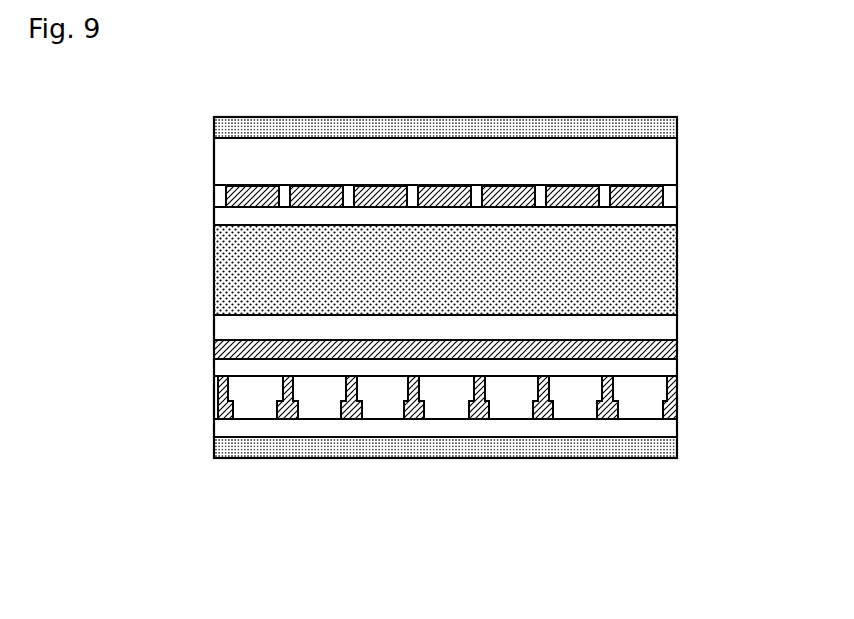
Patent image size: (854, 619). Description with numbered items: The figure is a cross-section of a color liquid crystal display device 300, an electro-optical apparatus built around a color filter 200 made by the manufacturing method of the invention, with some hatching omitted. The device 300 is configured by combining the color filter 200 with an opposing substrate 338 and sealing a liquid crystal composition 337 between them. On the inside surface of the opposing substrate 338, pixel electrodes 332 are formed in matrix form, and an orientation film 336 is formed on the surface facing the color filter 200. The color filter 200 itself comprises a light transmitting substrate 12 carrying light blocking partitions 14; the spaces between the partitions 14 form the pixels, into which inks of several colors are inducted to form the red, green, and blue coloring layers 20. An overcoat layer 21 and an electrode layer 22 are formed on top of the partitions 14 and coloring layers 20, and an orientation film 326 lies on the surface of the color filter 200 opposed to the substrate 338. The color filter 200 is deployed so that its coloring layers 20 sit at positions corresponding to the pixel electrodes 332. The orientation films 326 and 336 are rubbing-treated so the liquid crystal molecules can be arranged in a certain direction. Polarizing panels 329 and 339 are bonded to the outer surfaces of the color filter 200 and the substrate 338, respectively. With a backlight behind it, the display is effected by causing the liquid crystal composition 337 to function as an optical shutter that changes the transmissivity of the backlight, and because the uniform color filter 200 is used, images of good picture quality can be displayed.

The color liquid crystal display device 300 is at (514, 322).
The color filter 200 is at (514, 386).
The polarizing panel 339 is at (677, 128).
The opposing substrate 338 is at (677, 160).
The pixel electrodes 332 is at (677, 194).
The orientation film 336 is at (677, 217).
The liquid crystal composition 337 is at (677, 268).
The orientation film 326 is at (677, 325).
The electrode layer 22 is at (677, 348).
The overcoat layer 21 is at (677, 370).
The light blocking partitions 14 is at (677, 400).
The light transmitting substrate 12 is at (478, 421).
The coloring layers 20 is at (507, 419).
The polarizing panel 329 is at (677, 447).